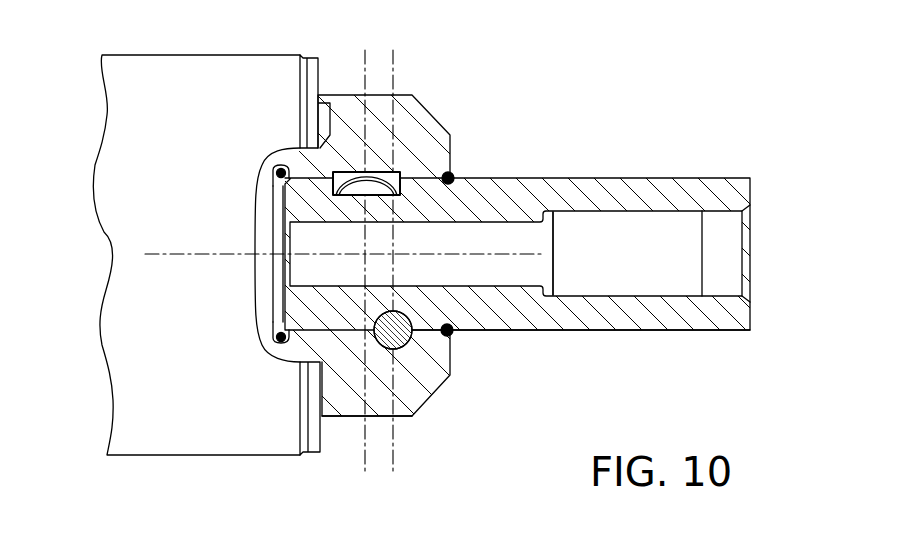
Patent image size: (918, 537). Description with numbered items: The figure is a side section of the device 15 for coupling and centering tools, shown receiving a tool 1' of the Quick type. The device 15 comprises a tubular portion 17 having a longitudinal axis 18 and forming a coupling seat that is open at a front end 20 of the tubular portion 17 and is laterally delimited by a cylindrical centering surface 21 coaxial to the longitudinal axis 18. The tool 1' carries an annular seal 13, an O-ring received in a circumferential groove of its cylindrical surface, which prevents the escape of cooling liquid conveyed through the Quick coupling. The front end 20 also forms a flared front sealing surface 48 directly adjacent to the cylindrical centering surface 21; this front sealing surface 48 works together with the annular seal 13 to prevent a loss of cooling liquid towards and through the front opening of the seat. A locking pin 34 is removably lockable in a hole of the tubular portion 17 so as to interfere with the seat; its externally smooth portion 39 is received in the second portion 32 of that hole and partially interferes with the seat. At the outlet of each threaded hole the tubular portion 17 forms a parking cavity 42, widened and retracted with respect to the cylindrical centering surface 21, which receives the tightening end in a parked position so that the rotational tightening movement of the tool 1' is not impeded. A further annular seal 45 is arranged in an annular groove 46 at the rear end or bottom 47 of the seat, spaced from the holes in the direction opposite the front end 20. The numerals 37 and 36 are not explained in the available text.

The annular seal 13 is at (470, 190).
The tubular portion 17 is at (410, 123).
The longitudinal axis 18 is at (166, 254).
The front end 20 is at (450, 150).
The cylindrical centering surface 21 is at (322, 363).
The parking cavity 42 is at (345, 172).
The annular seal 45 is at (262, 345).
The annular groove 46 is at (281, 168).
The rear end or bottom 47 is at (262, 180).
The flared front sealing surface 48 is at (447, 336).
The locking pin 34 is at (453, 332).
The externally smooth portion 39 is at (403, 350).
The tool 1' is at (530, 289).
The device 15 is at (406, 427).
The component 37 is at (492, 15).
The second portion 32 is at (585, 10).
The component 36 is at (642, 6).